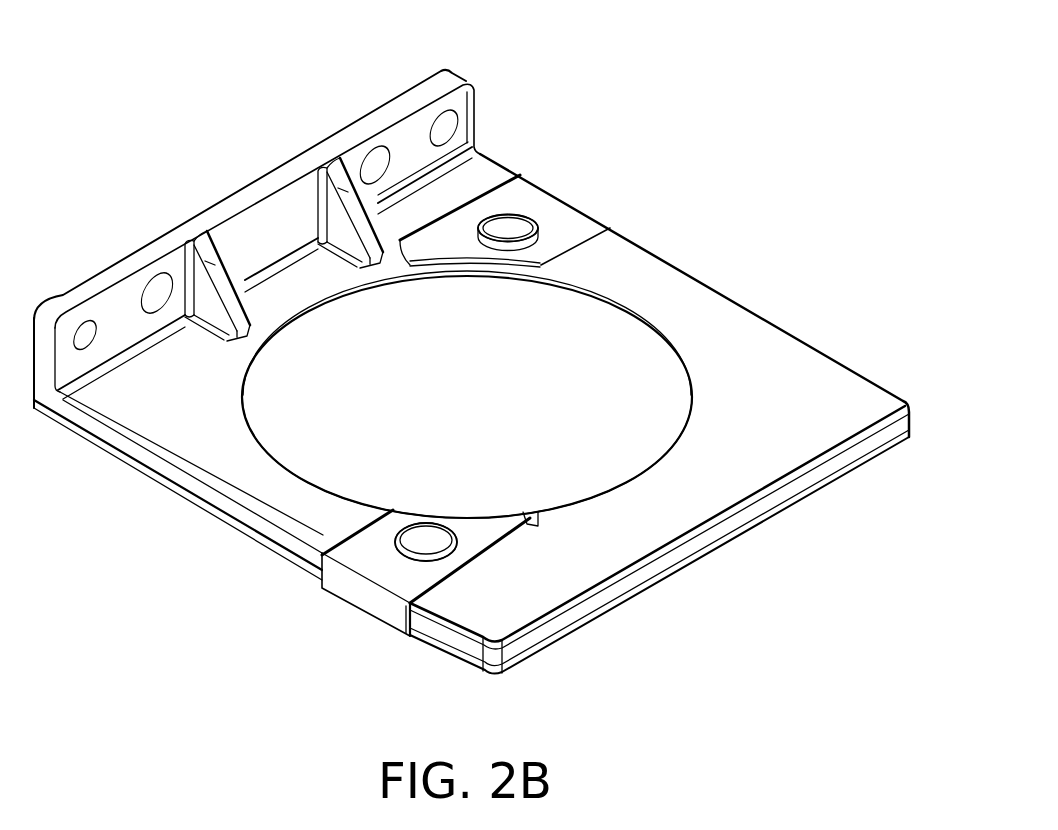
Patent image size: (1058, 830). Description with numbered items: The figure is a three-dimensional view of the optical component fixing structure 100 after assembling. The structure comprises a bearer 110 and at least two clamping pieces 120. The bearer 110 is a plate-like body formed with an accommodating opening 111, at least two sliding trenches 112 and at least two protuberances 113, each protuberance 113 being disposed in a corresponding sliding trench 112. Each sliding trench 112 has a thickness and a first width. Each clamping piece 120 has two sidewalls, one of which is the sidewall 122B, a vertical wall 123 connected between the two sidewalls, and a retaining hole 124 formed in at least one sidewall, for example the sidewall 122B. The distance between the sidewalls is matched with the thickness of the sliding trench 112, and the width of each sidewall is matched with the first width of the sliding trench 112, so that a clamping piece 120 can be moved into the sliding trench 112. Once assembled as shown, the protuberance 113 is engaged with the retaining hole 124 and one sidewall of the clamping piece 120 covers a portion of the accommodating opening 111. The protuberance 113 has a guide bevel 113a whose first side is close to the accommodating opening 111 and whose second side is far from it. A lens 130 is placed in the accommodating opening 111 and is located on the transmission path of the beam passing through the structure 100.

The optical component fixing structure 100 is at (183, 148).
The bearer 110 is at (833, 342).
The accommodating opening 111 is at (662, 317).
The sliding trench 112 is at (459, 195).
The protuberance 113 is at (612, 203).
The guide bevel 113a is at (535, 228).
The clamping piece 120 is at (575, 178).
The sidewall 122B is at (510, 203).
The vertical wall 123 is at (402, 620).
The retaining hole 124 is at (506, 237).
The lens 130 is at (630, 412).